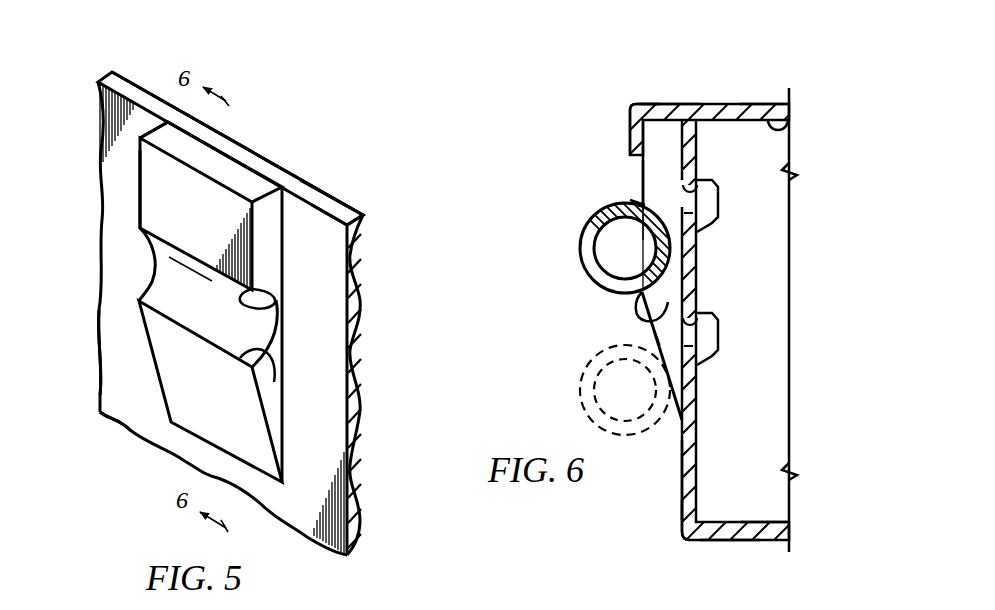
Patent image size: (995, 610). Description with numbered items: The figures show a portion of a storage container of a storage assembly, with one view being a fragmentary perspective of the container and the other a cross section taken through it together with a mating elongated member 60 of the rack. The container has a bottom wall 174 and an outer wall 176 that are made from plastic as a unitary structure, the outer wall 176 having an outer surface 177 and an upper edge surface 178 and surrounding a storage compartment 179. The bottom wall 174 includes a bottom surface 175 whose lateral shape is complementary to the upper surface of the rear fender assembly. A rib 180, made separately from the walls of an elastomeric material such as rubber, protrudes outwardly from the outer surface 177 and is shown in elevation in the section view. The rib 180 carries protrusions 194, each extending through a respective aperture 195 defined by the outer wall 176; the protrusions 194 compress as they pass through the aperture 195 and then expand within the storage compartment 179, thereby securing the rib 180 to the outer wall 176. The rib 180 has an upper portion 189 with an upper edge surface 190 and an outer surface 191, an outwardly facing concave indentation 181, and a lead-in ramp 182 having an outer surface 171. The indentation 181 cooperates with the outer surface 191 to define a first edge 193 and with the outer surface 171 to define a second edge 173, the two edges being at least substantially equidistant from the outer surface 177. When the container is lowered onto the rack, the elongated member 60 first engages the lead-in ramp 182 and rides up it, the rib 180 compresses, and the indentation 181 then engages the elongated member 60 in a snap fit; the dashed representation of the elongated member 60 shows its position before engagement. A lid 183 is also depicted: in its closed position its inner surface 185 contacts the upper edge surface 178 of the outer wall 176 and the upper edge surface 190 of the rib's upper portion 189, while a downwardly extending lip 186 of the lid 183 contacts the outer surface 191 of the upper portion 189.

In FIG. 6, the elongated member 60 is at (580, 248).
In FIG. 5, the outer surface 171 is at (189, 407).
In FIG. 6, the outer surface 171 is at (676, 416).
In FIG. 5, the second edge 173 is at (280, 378).
In FIG. 6, the second edge 173 is at (670, 302).
In FIG. 6, the bottom wall 174 is at (729, 543).
In FIG. 6, the bottom surface 175 is at (755, 541).
In FIG. 5, the outer wall 176 is at (98, 348).
In FIG. 6, the outer wall 176 is at (679, 509).
In FIG. 5, the outer surface 177 is at (302, 352).
In FIG. 6, the outer surface 177 is at (681, 483).
In FIG. 5, the upper edge surface 178 is at (310, 188).
In FIG. 6, the upper edge surface 178 is at (690, 105).
In FIG. 6, the storage compartment 179 is at (724, 422).
In FIG. 5, the rib 180 is at (124, 250).
In FIG. 6, the rib 180 is at (610, 308).
In FIG. 5, the outwardly facing concave indentation 181 is at (168, 283).
In FIG. 6, the outwardly facing concave indentation 181 is at (668, 253).
In FIG. 5, the lead-in ramp 182 is at (137, 382).
In FIG. 6, the lead-in ramp 182 is at (642, 327).
In FIG. 6, the lid 183 is at (745, 86).
In FIG. 6, the inner surface 185 is at (789, 130).
In FIG. 6, the downwardly extending lip 186 is at (630, 138).
In FIG. 5, the upper portion 189 is at (130, 182).
In FIG. 6, the upper portion 189 is at (636, 184).
In FIG. 5, the upper edge surface 190 is at (238, 166).
In FIG. 6, the upper edge surface 190 is at (664, 105).
In FIG. 5, the outer surface 191 is at (174, 221).
In FIG. 6, the outer surface 191 is at (642, 165).
In FIG. 5, the first edge 193 is at (272, 304).
In FIG. 6, the first edge 193 is at (633, 194).
In FIG. 6, the protrusion 194 is at (720, 208).
In FIG. 6, the aperture 195 is at (700, 188).